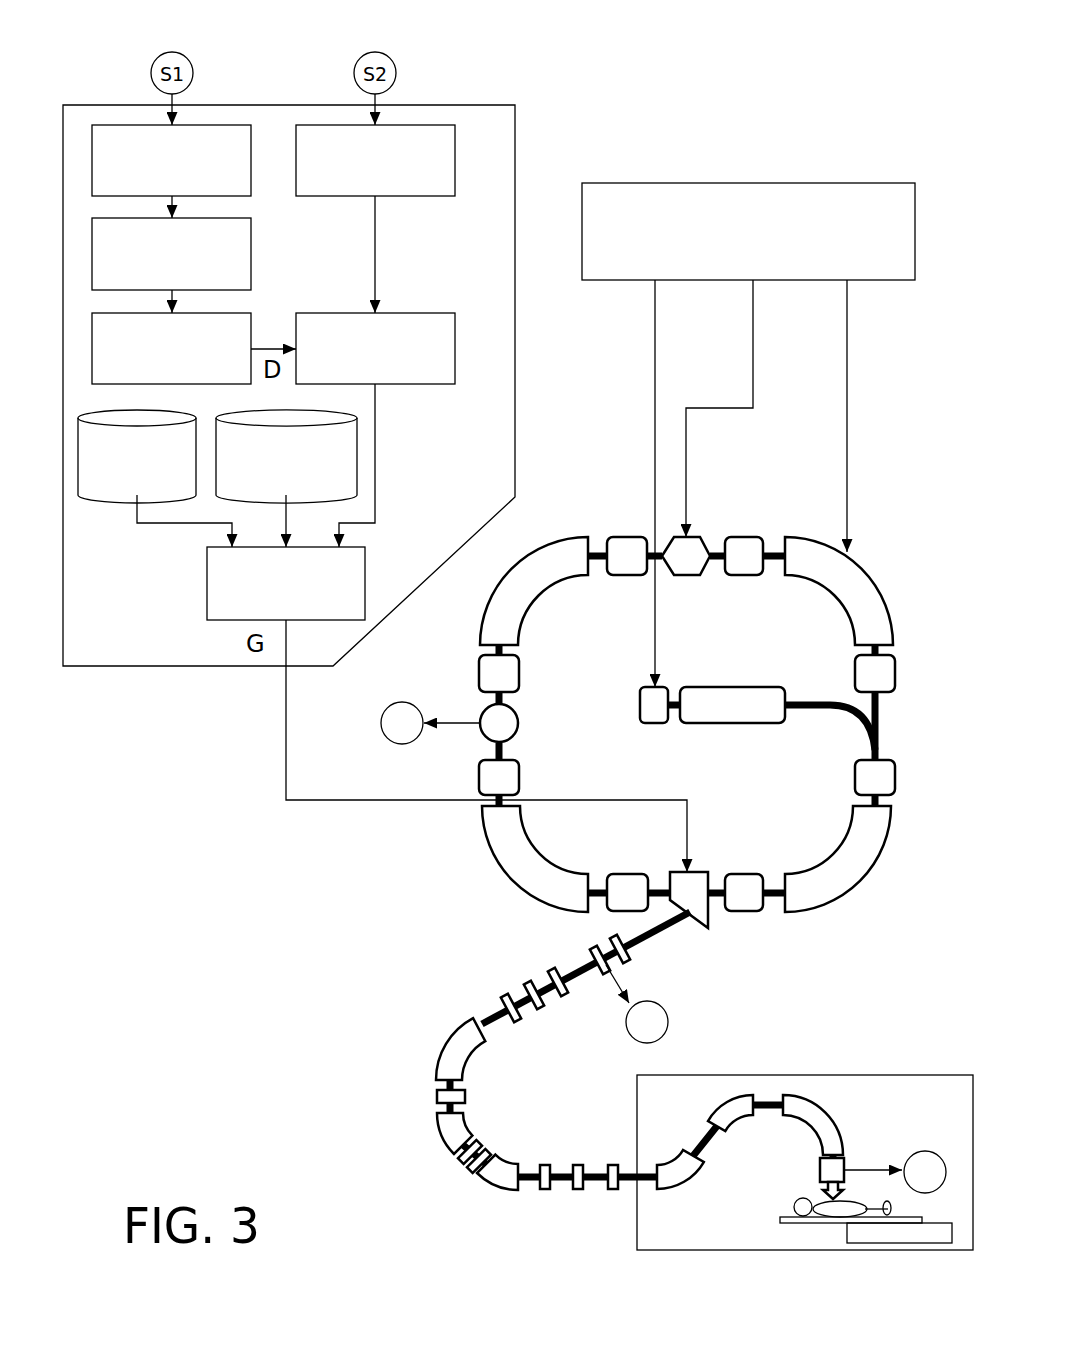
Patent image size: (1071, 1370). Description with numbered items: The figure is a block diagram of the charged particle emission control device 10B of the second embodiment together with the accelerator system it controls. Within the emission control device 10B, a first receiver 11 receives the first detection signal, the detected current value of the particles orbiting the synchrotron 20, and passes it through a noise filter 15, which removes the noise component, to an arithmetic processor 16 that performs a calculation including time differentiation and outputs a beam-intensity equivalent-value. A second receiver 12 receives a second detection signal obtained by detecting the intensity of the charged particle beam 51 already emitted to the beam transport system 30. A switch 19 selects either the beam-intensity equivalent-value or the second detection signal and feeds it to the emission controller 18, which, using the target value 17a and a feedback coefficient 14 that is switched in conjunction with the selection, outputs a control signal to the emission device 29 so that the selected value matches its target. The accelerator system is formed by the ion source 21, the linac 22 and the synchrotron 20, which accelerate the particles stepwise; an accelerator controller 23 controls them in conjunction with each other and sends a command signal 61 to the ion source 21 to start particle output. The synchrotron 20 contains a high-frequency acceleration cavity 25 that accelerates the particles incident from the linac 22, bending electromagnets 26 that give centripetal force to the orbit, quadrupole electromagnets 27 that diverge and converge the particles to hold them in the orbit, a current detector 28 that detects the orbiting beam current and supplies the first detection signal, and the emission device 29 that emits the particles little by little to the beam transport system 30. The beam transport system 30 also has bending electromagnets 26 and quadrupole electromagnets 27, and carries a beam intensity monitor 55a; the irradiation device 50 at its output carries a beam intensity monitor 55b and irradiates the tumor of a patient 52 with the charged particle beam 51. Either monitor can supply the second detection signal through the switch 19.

The charged particle emission control device 10B is at (104, 105).
The first receiver 11 is at (236, 125).
The second receiver 12 is at (435, 125).
The feedback coefficient 14 is at (358, 457).
The noise filter 15 is at (251, 251).
The arithmetic processor 16 is at (252, 322).
The target value 17a is at (101, 498).
The emission controller 18 is at (365, 584).
The switch 19 is at (425, 313).
The synchrotron 20 is at (586, 491).
The ion source 21 is at (650, 687).
The linac 22 is at (713, 687).
The accelerator controller 23 is at (668, 183).
The high-frequency acceleration cavity 25 is at (700, 537).
The bending electromagnets 26 is at (872, 574).
The quadrupole electromagnets 27 is at (895, 677).
The current detector 28 is at (518, 725).
The emission device 29 is at (710, 868).
The beam transport system 30 is at (491, 1048).
The irradiation device 50 is at (858, 1075).
The charged particle beam 51 is at (822, 1194).
The patient 52 is at (780, 1212).
The beam intensity monitor 55a is at (593, 949).
The beam intensity monitor 55b is at (844, 1166).
The command signal 61 is at (729, 483).